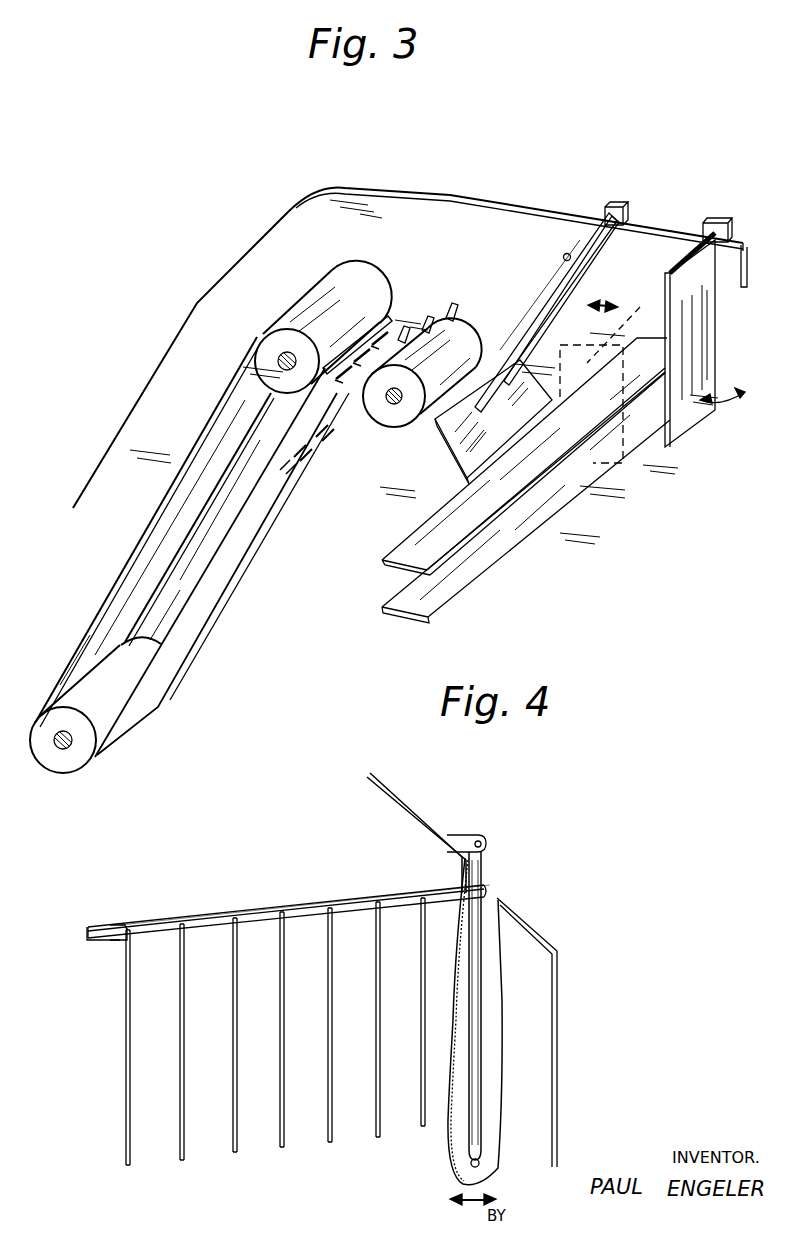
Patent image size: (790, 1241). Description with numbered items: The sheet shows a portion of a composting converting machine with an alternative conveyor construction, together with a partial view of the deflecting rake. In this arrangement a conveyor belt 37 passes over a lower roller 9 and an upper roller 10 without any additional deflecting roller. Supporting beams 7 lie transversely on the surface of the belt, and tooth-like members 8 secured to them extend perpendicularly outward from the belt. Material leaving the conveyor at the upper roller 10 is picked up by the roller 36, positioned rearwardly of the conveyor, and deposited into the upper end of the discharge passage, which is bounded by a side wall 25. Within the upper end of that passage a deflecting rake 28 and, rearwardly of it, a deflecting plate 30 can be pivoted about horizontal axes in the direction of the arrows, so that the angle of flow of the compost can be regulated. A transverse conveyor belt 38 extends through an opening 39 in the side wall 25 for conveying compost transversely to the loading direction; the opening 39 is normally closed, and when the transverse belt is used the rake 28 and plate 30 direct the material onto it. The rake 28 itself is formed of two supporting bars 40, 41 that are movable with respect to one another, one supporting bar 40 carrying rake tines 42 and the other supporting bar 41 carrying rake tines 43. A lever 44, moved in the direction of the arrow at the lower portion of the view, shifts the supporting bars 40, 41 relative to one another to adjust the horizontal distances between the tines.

In FIG. 3, the supporting beam 7 is at (305, 452).
In FIG. 3, the tooth-like member 8 is at (332, 432).
In FIG. 3, the lower roller 9 is at (56, 758).
In FIG. 3, the upper roller 10 is at (270, 342).
In FIG. 3, the side wall 25 is at (450, 222).
In FIG. 4, the side wall 25 is at (412, 806).
In FIG. 3, the deflecting rake 28 is at (537, 281).
In FIG. 4, the deflecting rake 28 is at (209, 900).
In FIG. 3, the deflecting plate 30 is at (690, 418).
In FIG. 3, the roller 36 is at (409, 414).
In FIG. 3, the conveyor belt 37 is at (220, 402).
In FIG. 3, the transverse conveyor belt 38 is at (527, 530).
In FIG. 3, the opening 39 is at (611, 374).
In FIG. 4, the supporting bar 40 is at (95, 938).
In FIG. 4, the supporting bar 41 is at (148, 927).
In FIG. 4, the rake tine 42 is at (180, 977).
In FIG. 4, the rake tine 43 is at (130, 1067).
In FIG. 4, the lever 44 is at (476, 1093).